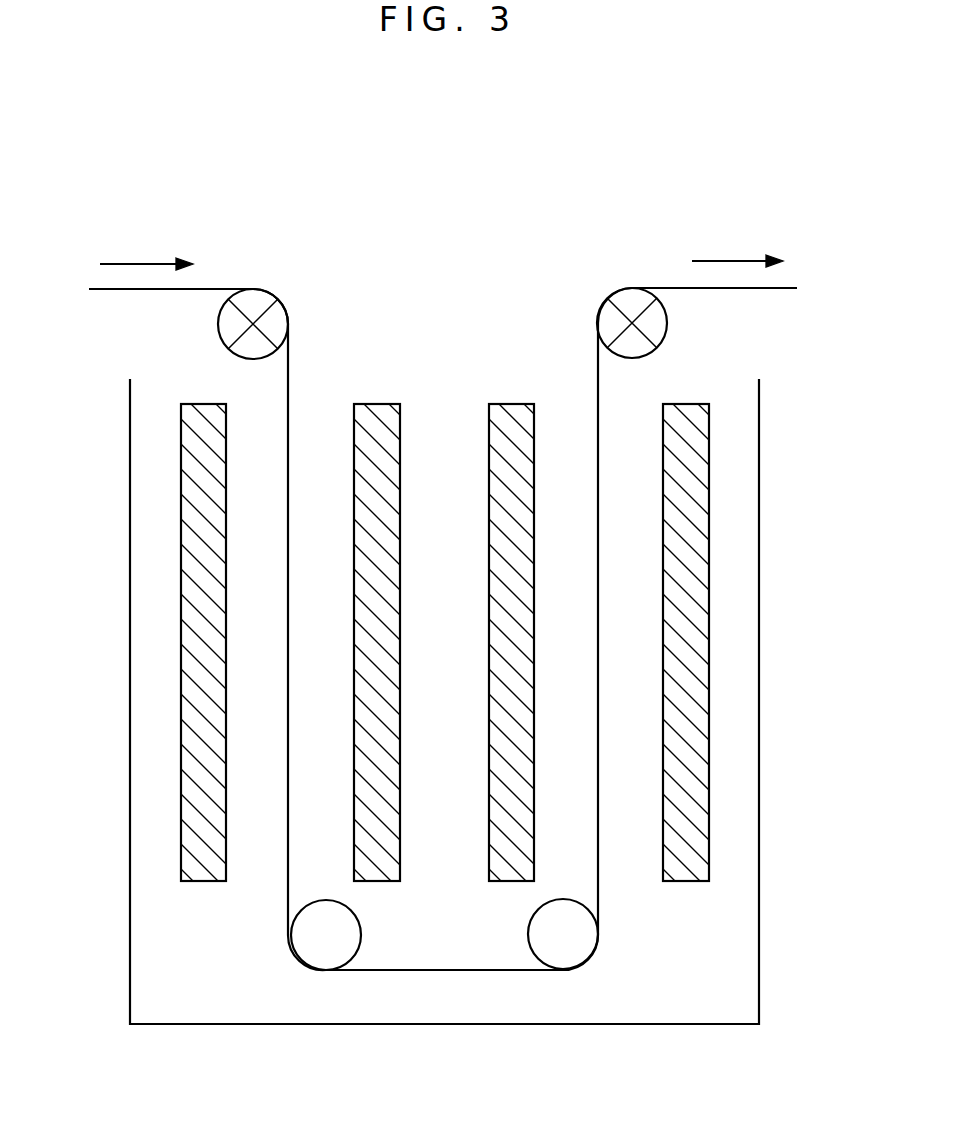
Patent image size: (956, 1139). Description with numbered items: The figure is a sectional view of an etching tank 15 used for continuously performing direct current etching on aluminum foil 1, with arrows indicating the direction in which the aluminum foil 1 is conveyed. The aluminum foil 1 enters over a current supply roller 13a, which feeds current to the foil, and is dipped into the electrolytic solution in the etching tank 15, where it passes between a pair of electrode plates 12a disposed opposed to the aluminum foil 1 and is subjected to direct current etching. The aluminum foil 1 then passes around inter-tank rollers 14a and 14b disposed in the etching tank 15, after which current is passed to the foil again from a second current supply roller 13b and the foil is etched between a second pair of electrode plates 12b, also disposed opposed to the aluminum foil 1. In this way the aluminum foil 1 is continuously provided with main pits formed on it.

The aluminum foil 1 is at (115, 291).
The pair of electrode plates 12a is at (368, 756).
The pair of electrode plates 12b is at (518, 746).
The current supply roller 13a is at (253, 300).
The current supply roller 13b is at (632, 300).
The inter-tank roller 14a is at (323, 957).
The inter-tank roller 14b is at (560, 957).
The etching tank 15 is at (758, 455).